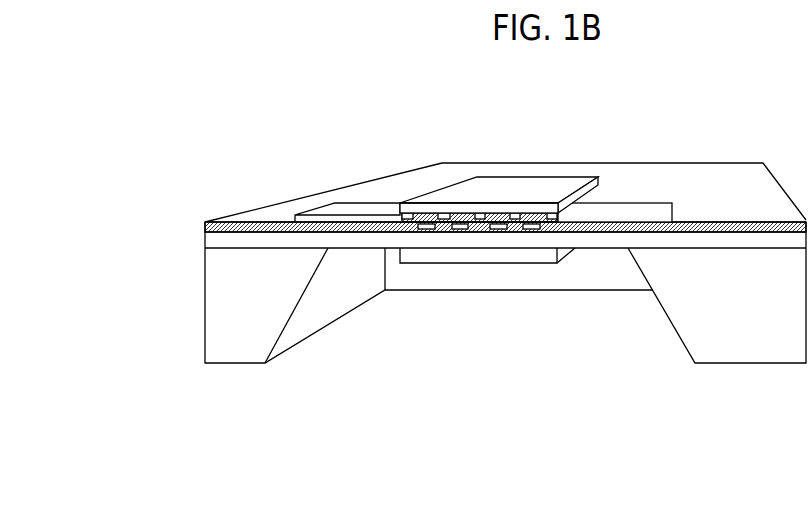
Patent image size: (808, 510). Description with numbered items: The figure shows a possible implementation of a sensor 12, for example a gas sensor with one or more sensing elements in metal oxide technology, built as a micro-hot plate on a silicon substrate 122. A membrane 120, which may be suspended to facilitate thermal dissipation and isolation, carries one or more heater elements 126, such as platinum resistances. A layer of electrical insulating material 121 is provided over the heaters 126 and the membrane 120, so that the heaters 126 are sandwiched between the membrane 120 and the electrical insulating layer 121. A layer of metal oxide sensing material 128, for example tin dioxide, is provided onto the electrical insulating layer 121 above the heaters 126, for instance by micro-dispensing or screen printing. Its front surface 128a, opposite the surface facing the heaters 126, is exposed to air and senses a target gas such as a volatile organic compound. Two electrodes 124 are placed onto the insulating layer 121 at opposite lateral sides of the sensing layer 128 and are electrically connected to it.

The sensor 12 is at (343, 141).
The membrane 120 is at (597, 237).
The electrical insulating layer 121 is at (272, 226).
The silicon substrate 122 is at (470, 256).
The electrodes 124 is at (333, 203).
The heater elements 126 is at (462, 230).
The layer of metal oxide sensing material 128 is at (533, 187).
The front surface 128a is at (477, 194).